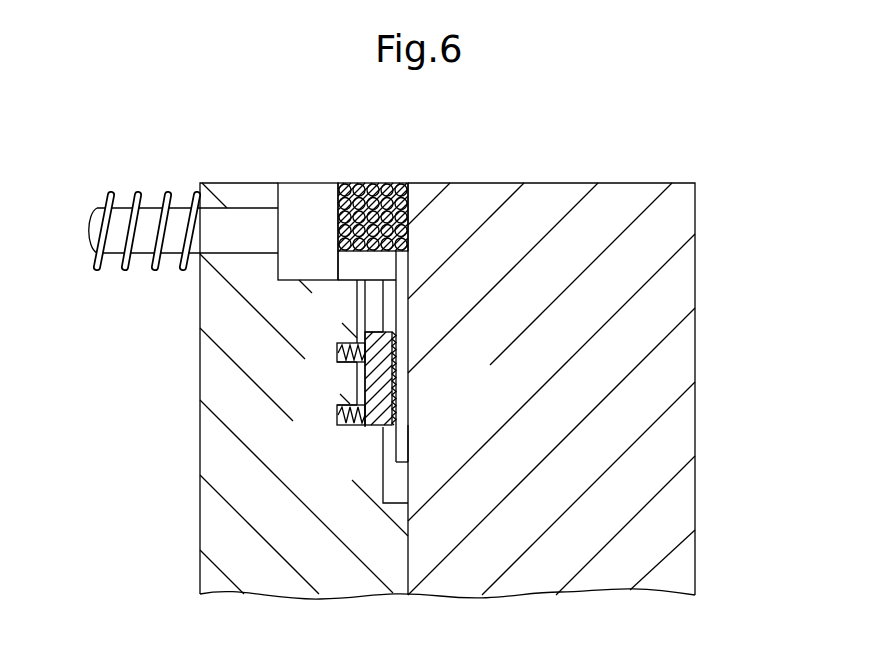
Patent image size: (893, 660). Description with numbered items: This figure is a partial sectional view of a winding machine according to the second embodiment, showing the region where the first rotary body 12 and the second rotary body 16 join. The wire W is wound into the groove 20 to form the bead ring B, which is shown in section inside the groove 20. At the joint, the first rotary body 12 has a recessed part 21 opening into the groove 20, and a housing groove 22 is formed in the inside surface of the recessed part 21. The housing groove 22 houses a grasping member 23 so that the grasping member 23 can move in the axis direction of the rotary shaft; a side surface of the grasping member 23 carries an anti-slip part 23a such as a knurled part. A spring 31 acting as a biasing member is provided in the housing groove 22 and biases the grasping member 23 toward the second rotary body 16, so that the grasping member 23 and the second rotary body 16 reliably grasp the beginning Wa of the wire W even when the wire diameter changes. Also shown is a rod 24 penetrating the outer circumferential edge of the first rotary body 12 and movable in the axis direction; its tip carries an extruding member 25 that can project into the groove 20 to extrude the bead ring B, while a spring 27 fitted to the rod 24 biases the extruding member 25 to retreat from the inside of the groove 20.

The first rotary body 12 is at (212, 447).
The second rotary body 16 is at (688, 487).
The groove 20 is at (408, 248).
The recessed part 21 is at (383, 463).
The housing groove 22 is at (375, 304).
The grasping member 23 is at (380, 430).
The anti-slip part 23a is at (398, 382).
The rod 24 is at (101, 209).
The extruding member 25 is at (305, 190).
The spring 27 is at (170, 192).
The spring 31 is at (337, 408).
The wire W is at (354, 182).
The bead ring B is at (395, 182).
The beginning of the wire Wa is at (408, 436).